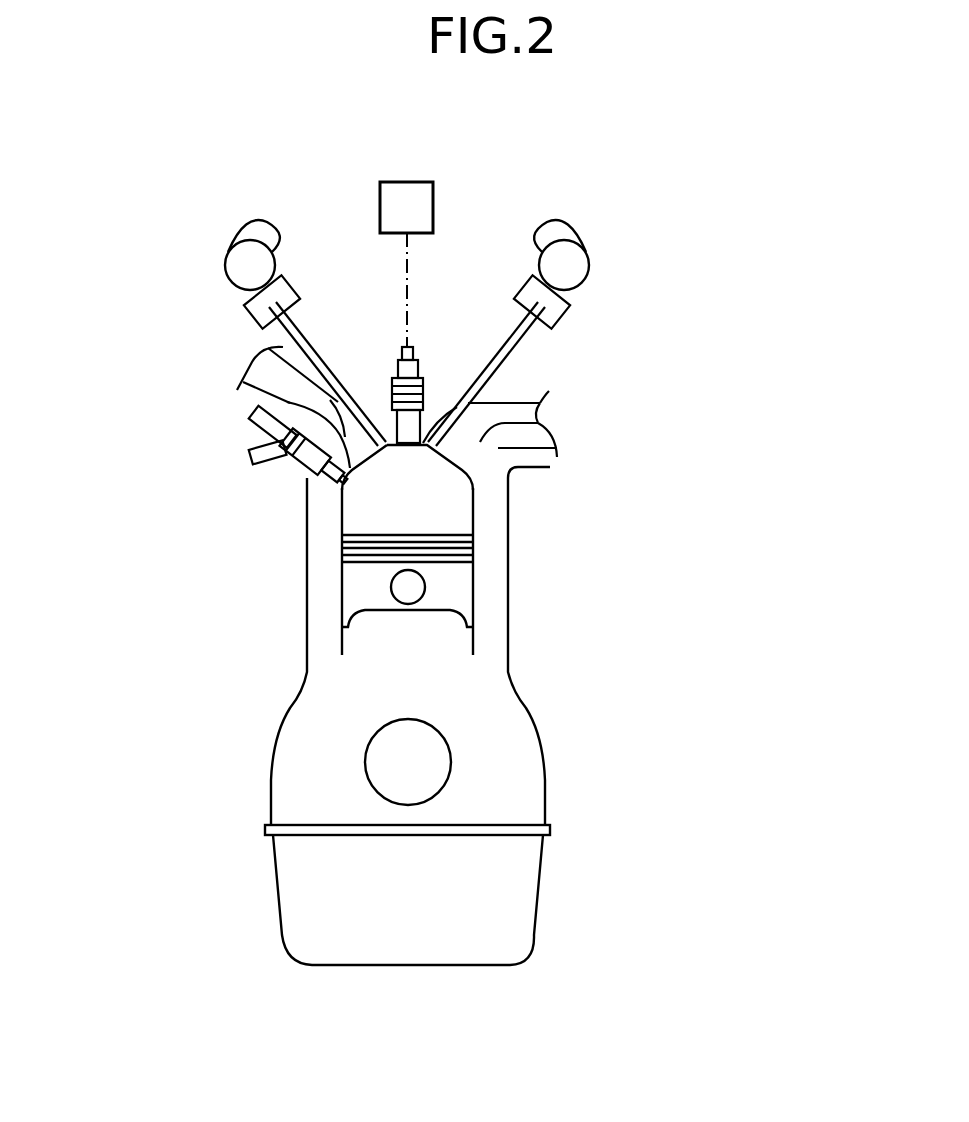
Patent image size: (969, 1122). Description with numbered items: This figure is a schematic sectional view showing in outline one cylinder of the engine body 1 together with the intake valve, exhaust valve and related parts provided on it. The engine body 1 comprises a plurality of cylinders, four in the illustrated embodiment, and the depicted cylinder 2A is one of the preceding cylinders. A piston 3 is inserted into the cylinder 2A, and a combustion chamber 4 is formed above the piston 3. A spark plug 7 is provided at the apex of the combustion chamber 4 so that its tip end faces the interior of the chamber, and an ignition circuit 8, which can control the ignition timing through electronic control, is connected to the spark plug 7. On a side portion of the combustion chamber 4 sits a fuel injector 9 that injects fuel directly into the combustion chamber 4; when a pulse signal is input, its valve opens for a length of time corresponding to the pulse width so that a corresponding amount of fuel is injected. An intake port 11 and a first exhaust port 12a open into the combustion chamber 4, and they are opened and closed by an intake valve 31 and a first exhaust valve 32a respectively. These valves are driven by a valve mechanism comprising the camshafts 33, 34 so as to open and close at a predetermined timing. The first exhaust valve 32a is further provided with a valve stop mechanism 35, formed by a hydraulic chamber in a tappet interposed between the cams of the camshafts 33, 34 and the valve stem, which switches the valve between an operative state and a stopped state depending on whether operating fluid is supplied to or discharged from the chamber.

The engine body 1 is at (300, 615).
The cylinder 2A is at (508, 492).
The piston 3 is at (460, 585).
The combustion chamber 4 is at (453, 517).
The spark plug 7 is at (396, 372).
The ignition circuit 8 is at (407, 182).
The fuel injector 9 is at (300, 470).
The intake port 11 is at (287, 402).
The first exhaust port 12a is at (540, 421).
The intake valve 31 is at (322, 392).
The first exhaust valve 32a is at (515, 356).
The camshaft 33 is at (230, 242).
The camshaft 34 is at (589, 256).
The valve stop mechanism 35 is at (255, 305).